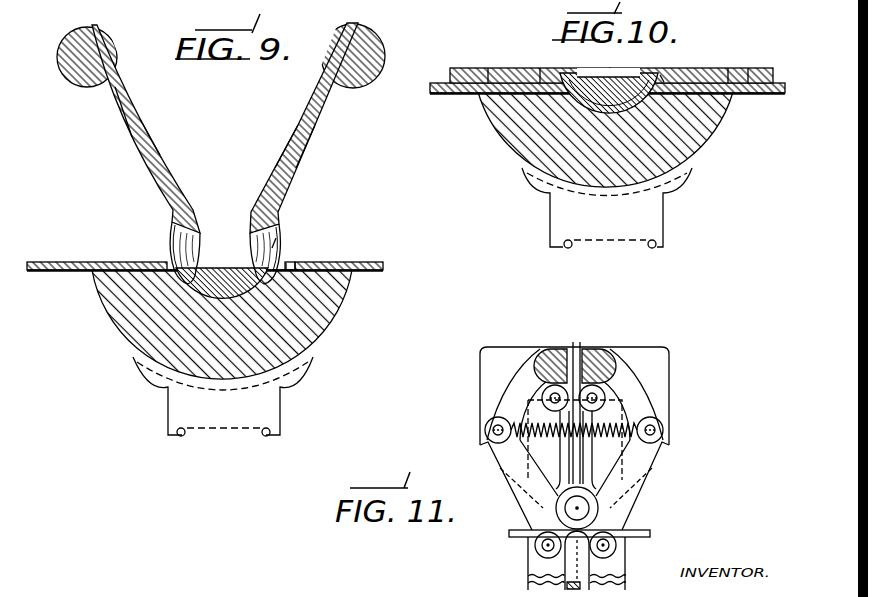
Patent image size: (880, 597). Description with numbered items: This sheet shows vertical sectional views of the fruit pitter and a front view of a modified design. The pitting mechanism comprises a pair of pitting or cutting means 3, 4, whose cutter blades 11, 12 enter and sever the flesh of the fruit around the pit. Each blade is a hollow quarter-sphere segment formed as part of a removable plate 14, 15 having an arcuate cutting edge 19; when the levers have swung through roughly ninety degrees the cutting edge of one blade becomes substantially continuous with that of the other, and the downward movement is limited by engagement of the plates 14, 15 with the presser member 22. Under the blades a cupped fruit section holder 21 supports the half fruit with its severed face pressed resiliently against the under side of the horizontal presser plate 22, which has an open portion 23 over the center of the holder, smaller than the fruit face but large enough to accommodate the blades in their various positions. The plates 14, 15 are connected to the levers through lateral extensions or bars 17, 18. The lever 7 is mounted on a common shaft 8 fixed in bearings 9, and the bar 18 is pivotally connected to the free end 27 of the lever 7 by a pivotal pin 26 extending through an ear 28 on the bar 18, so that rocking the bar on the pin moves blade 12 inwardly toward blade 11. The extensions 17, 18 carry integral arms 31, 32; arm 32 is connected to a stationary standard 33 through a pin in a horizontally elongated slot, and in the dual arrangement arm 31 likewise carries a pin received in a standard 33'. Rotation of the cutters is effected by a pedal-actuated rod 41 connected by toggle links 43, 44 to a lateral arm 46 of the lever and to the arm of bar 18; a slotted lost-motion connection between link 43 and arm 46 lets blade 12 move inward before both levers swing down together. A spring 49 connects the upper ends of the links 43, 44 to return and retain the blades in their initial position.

In FIG. 9, the pitting or cutting means 3 is at (143, 155).
In FIG. 10, the pitting or cutting means 3 is at (458, 66).
In FIG. 9, the pitting or cutting means 4 is at (312, 138).
In FIG. 10, the pitting or cutting means 4 is at (768, 62).
In FIG. 11, the lever 7 is at (598, 488).
In FIG. 11, the shaft 8 is at (580, 508).
In FIG. 9, the bearings 9 is at (173, 233).
In FIG. 10, the bearings 9 is at (600, 56).
In FIG. 11, the bearings 9 is at (542, 512).
In FIG. 9, the cutter blade 11 is at (157, 180).
In FIG. 10, the cutter blade 11 is at (488, 66).
In FIG. 9, the cutter blade 12 is at (293, 170).
In FIG. 10, the cutter blade 12 is at (748, 66).
In FIG. 9, the plate 14 is at (130, 132).
In FIG. 10, the plate 14 is at (537, 62).
In FIG. 9, the plate 15 is at (282, 193).
In FIG. 10, the plate 15 is at (757, 20).
In FIG. 9, the lateral extension or bar 17 is at (78, 83).
In FIG. 11, the lateral extension or bar 17 is at (548, 352).
In FIG. 9, the lateral extension or bar 18 is at (358, 80).
In FIG. 11, the lateral extension or bar 18 is at (602, 350).
In FIG. 9, the arcuate cutting edges 19 is at (273, 237).
In FIG. 10, the arcuate cutting edges 19 is at (656, 70).
In FIG. 9, the fruit section holder 21 is at (267, 410).
In FIG. 10, the fruit section holder 21 is at (638, 208).
In FIG. 9, the presser member or plate 22 is at (373, 260).
In FIG. 10, the presser member or plate 22 is at (770, 93).
In FIG. 9, the open portion 23 is at (289, 258).
In FIG. 10, the open portion 23 is at (667, 75).
In FIG. 11, the pivotal pin 26 is at (603, 402).
In FIG. 11, the free end 27 is at (625, 382).
In FIG. 11, the ear 28 is at (574, 345).
In FIG. 11, the arm 31 is at (485, 362).
In FIG. 11, the arm 32 is at (663, 408).
In FIG. 11, the stationary standard 33 is at (546, 563).
In FIG. 11, the standard 33' is at (559, 547).
In FIG. 11, the rod 41 is at (574, 572).
In FIG. 11, the toggle link 43 is at (517, 487).
In FIG. 11, the toggle link 44 is at (640, 480).
In FIG. 11, the lateral arm 46 is at (515, 390).
In FIG. 11, the spring 49 is at (535, 448).